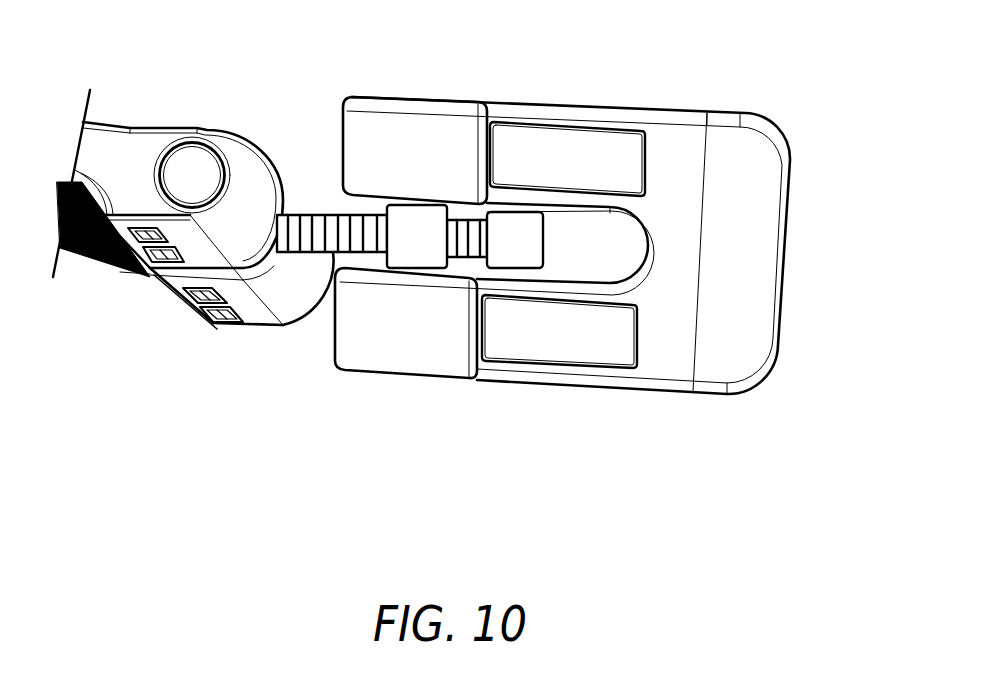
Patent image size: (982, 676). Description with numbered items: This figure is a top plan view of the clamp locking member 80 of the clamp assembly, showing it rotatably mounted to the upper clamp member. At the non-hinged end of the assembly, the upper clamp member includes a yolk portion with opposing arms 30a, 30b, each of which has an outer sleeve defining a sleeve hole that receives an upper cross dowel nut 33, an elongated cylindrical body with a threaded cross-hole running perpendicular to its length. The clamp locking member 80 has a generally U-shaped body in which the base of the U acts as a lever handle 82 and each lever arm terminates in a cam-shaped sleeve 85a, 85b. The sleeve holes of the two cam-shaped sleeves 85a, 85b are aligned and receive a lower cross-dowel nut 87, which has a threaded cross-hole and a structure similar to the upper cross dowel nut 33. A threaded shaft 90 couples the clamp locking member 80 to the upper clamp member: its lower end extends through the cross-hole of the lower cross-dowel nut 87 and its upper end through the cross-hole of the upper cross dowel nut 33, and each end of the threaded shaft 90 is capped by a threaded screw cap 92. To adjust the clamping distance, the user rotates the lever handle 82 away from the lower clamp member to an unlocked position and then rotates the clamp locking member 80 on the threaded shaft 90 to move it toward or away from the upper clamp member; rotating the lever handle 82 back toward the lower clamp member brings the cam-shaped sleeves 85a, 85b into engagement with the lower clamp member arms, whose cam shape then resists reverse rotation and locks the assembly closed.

The opposing arm of upper clamp member yolk portion 30a is at (153, 140).
The opposing arm of upper clamp member yolk portion 30b is at (257, 313).
The upper cross dowel nut 33 is at (187, 190).
The clamp locking member 80 is at (613, 390).
The lever handle 82 is at (780, 130).
The cam-shaped sleeve 85a is at (392, 118).
The cam-shaped sleeve 85b is at (378, 353).
The lower cross-dowel nut 87 is at (418, 220).
The threaded shaft 90 is at (318, 213).
The threaded screw cap 92 is at (527, 235).